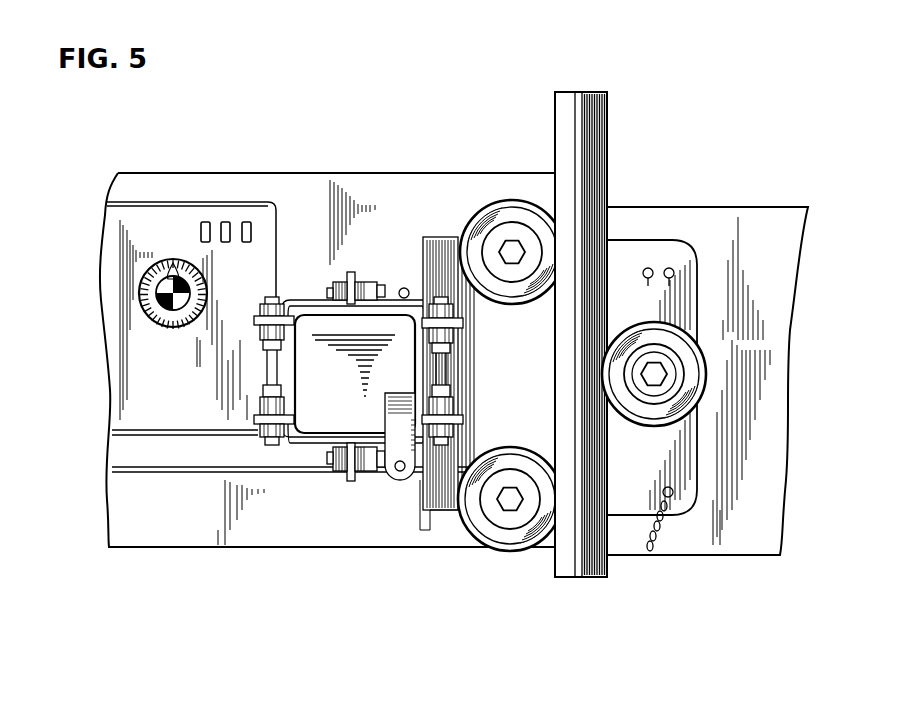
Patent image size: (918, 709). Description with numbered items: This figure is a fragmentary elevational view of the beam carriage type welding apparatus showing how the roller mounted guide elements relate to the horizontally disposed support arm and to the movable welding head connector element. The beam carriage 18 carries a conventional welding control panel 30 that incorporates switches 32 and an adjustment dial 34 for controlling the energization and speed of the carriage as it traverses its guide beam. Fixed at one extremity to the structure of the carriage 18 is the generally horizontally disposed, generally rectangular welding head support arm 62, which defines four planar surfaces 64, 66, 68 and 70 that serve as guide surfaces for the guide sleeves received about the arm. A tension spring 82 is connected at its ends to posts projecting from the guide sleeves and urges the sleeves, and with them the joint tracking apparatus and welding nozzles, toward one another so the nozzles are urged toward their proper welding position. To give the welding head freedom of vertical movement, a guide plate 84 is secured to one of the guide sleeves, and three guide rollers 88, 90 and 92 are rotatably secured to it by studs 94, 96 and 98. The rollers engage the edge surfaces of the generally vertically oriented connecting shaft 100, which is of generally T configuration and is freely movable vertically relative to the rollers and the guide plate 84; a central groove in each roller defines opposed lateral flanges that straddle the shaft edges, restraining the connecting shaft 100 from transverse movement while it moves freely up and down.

The beam carriage 18 is at (328, 187).
The welding control panel 30 is at (132, 400).
The switches 32 is at (247, 222).
The adjustment dial 34 is at (160, 294).
The welding head support arm 62 is at (320, 335).
The planar surface 64 is at (278, 367).
The planar surface 66 is at (384, 300).
The planar surface 68 is at (443, 372).
The planar surface 70 is at (315, 437).
The tension spring 82 is at (405, 288).
The guide plate 84 is at (648, 250).
The guide roller 88 is at (500, 205).
The guide roller 90 is at (688, 372).
The guide roller 92 is at (487, 527).
The stud 94 is at (513, 248).
The stud 96 is at (656, 370).
The stud 98 is at (509, 499).
The connecting shaft 100 is at (604, 128).